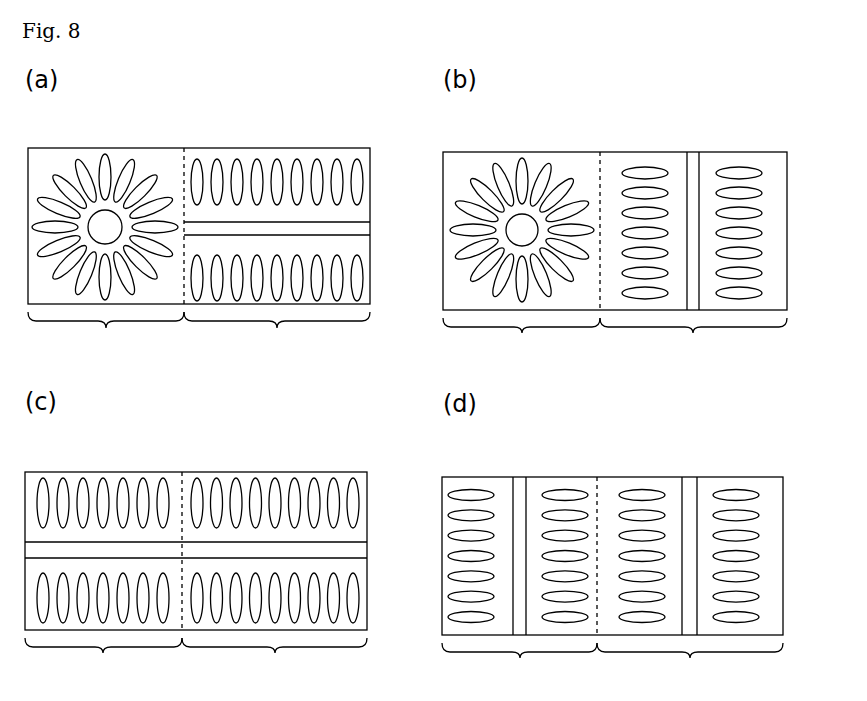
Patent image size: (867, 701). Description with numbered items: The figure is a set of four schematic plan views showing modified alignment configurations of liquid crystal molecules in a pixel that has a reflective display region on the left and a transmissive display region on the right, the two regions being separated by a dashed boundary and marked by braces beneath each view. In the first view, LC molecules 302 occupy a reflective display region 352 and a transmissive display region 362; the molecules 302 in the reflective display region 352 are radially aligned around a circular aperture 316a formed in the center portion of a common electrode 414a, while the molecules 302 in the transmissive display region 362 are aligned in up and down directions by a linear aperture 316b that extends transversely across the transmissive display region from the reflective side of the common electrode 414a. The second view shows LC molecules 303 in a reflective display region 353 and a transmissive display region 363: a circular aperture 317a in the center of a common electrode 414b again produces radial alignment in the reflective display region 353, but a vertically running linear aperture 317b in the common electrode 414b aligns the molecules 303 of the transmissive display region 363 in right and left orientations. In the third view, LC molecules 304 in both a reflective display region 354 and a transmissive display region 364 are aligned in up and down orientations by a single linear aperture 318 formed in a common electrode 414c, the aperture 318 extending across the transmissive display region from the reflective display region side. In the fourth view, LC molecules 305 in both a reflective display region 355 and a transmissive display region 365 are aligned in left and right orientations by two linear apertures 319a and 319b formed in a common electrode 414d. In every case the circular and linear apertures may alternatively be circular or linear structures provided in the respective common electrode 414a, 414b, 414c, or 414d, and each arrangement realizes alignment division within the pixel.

The circular aperture 316a is at (107, 217).
The LC molecules 302 is at (258, 165).
The common electrode 414a is at (347, 160).
The linear aperture 316b is at (357, 232).
The reflective display region 352 is at (106, 339).
The transmissive display region 362 is at (277, 339).
The circular aperture 317a is at (522, 222).
The LC molecules 303 is at (645, 172).
The linear aperture 317b is at (692, 162).
The common electrode 414b is at (775, 163).
The reflective display region 353 is at (521, 343).
The transmissive display region 363 is at (693, 343).
The LC molecules 304 is at (277, 490).
The common electrode 414c is at (338, 478).
The linear aperture 318 is at (353, 553).
The reflective display region 354 is at (103, 664).
The transmissive display region 364 is at (274, 664).
The linear aperture 319a is at (516, 483).
The LC molecules 305 is at (642, 495).
The linear aperture 319b is at (687, 483).
The common electrode 414d is at (770, 483).
The reflective display region 355 is at (519, 668).
The transmissive display region 365 is at (690, 668).